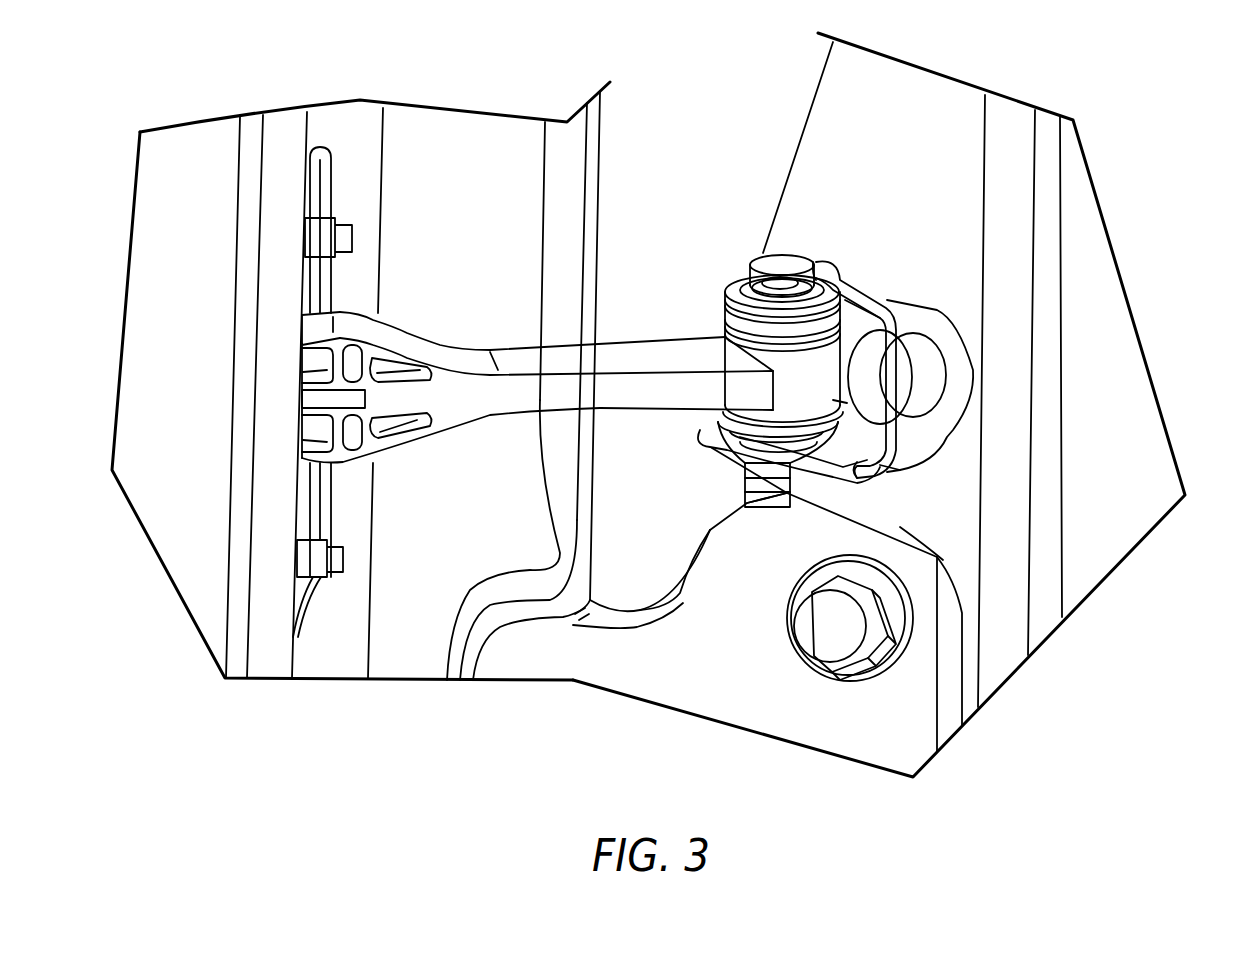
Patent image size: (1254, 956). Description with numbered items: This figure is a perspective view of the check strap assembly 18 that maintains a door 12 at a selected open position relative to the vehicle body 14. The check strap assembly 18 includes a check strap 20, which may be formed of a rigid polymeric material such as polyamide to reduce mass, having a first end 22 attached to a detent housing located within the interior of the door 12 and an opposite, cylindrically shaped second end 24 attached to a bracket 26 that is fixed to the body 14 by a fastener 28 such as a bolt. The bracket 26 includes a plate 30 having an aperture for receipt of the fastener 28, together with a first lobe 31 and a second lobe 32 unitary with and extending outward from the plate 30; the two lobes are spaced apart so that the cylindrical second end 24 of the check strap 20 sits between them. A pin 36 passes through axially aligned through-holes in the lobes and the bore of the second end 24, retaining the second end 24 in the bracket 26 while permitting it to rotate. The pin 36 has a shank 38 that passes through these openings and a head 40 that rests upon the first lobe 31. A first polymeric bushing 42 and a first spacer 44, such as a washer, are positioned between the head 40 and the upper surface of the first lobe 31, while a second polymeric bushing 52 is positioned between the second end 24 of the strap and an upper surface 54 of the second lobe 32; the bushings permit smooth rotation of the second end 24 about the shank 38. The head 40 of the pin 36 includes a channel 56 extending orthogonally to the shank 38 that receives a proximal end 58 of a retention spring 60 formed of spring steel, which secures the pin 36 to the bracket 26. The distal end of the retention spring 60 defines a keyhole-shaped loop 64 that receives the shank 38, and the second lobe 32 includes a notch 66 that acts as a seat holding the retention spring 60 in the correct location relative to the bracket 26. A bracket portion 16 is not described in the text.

The door 12 is at (426, 230).
The vehicle body 14 is at (904, 120).
The bracket 16 is at (848, 722).
The check strap assembly 18 is at (652, 146).
The check strap 20 is at (553, 397).
The first end 22 is at (353, 408).
The second end 24 is at (813, 350).
The bracket 26 is at (935, 463).
The fastener 28 is at (920, 372).
The plate 30 is at (950, 400).
The first lobe 31 is at (860, 320).
The second lobe 32 is at (854, 437).
The pin 36 is at (762, 250).
The shank 38 is at (745, 485).
The head 40 is at (753, 283).
The first polymeric bushing 42 is at (743, 288).
The first spacer 44 is at (740, 317).
The second polymeric bushing 52 is at (735, 432).
The upper surface 54 is at (793, 430).
The channel 56 is at (767, 277).
The proximal end 58 is at (813, 260).
The retention spring 60 is at (893, 360).
The keyhole-shaped loop 64 is at (710, 548).
The notch 66 is at (900, 540).